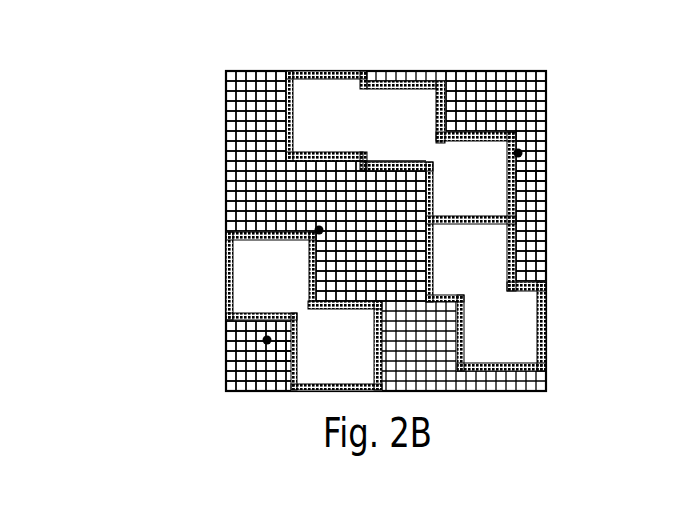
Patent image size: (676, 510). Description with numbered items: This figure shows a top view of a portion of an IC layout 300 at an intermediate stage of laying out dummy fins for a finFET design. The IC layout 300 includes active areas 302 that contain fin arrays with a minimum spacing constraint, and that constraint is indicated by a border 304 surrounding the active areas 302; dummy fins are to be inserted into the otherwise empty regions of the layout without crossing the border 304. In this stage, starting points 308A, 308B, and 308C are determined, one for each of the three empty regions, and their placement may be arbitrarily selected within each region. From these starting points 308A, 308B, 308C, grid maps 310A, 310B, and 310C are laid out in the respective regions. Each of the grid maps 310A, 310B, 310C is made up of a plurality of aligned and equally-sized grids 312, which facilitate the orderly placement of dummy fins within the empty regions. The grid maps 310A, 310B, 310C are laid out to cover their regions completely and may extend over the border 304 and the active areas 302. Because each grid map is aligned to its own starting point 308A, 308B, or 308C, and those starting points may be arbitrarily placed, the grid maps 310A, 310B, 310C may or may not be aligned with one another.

The IC layout 300 is at (194, 124).
The active areas 302 is at (324, 99).
The border 304 is at (401, 154).
The starting point 308A is at (302, 234).
The starting point 308B is at (531, 144).
The starting point 308C is at (252, 344).
The grid map 310A is at (272, 197).
The grid map 310B is at (504, 90).
The grid map 310C is at (255, 374).
The grids 312 is at (291, 345).